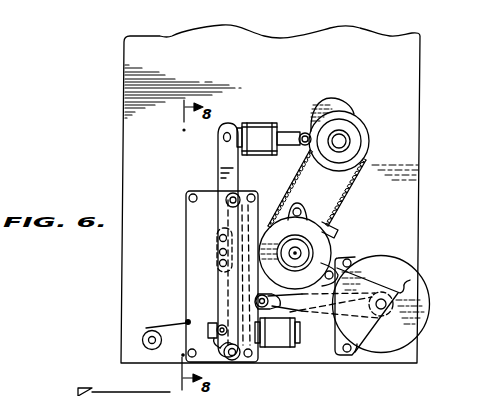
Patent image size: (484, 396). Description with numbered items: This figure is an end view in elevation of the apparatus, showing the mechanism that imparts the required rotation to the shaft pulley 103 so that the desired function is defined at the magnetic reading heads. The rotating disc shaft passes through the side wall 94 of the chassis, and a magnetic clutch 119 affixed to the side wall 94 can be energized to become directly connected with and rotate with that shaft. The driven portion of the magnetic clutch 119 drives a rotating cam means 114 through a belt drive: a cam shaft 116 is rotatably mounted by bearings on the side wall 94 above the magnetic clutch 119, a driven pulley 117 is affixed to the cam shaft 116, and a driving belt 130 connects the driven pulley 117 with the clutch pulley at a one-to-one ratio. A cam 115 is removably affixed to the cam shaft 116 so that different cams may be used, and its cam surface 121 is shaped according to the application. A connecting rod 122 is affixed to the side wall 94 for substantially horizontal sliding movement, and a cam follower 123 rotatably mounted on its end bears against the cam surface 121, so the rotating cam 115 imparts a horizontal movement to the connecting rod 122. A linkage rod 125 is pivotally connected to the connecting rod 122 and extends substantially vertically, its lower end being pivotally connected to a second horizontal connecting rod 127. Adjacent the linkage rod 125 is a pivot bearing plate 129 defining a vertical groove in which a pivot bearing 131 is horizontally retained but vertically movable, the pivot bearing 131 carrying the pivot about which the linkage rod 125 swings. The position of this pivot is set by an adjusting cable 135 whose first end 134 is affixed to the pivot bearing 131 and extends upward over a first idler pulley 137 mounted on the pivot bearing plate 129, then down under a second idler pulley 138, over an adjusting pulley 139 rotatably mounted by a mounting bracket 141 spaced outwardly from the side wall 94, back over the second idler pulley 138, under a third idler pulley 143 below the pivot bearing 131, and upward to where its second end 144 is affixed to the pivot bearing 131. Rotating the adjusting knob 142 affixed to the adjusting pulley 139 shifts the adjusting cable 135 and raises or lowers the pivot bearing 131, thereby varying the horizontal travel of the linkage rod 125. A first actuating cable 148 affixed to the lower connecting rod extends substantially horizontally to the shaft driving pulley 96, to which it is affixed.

The side wall 94 is at (372, 59).
The shaft driving pulley 96 is at (145, 328).
The shaft pulley 103 is at (149, 342).
The rotating cam means 114 is at (363, 122).
The cam 115 is at (345, 114).
The cam shaft 116 is at (342, 140).
The driven pulley 117 is at (367, 157).
The magnetic clutch 119 is at (322, 246).
The cam surface 121 is at (328, 99).
The connecting rod 122 is at (284, 127).
The cam follower 123 is at (305, 132).
The linkage rod 125 is at (218, 160).
The second horizontal connecting rod 127 is at (233, 361).
The pivot bearing plate 129 is at (187, 323).
The driving belt 130 is at (346, 200).
The pivot bearing 131 is at (221, 253).
The first end of adjusting cable 134 is at (221, 236).
The adjusting cable 135 is at (300, 307).
The first idler pulley 137 is at (238, 197).
The second idler pulley 138 is at (281, 270).
The adjusting pulley 139 is at (410, 280).
The mounting bracket 141 is at (368, 352).
The adjusting knob 142 is at (430, 305).
The third idler pulley 143 is at (240, 356).
The second end of adjusting cable 144 is at (221, 265).
The first actuating cable 148 is at (207, 328).